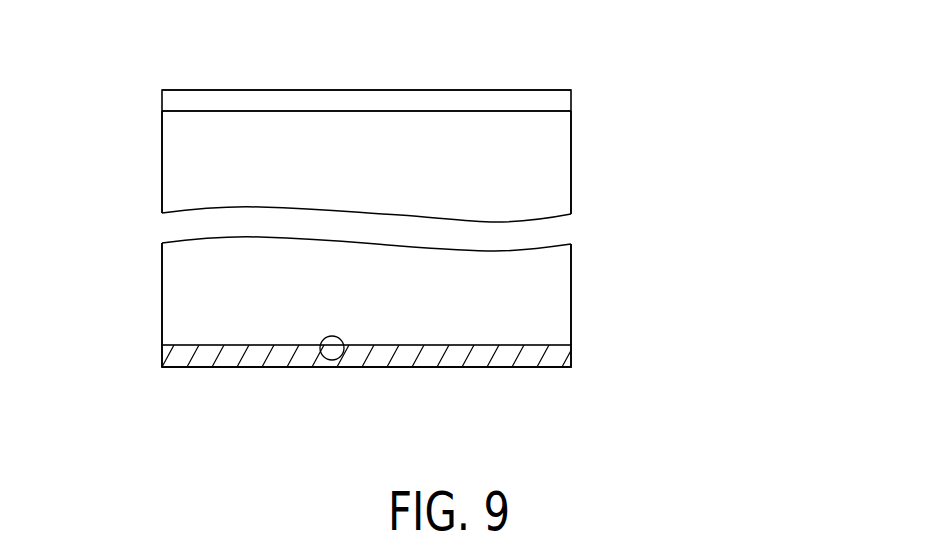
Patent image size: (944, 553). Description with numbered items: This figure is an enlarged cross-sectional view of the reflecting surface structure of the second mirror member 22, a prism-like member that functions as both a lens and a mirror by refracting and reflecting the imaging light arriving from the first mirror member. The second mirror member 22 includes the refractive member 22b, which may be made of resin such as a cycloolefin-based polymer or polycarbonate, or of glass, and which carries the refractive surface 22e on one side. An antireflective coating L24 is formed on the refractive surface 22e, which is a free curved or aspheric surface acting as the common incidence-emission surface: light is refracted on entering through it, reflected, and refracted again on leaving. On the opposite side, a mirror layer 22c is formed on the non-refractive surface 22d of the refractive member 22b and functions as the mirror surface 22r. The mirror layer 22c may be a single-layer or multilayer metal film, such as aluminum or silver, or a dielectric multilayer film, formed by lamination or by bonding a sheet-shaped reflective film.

The second mirror member 22 is at (152, 90).
The refractive surface 22e is at (461, 90).
The antireflective coating L24 is at (277, 90).
The refractive member 22b is at (555, 164).
The mirror layer 22c is at (553, 357).
The mirror surface 22r is at (333, 360).
The non-refractive surface 22d is at (397, 345).